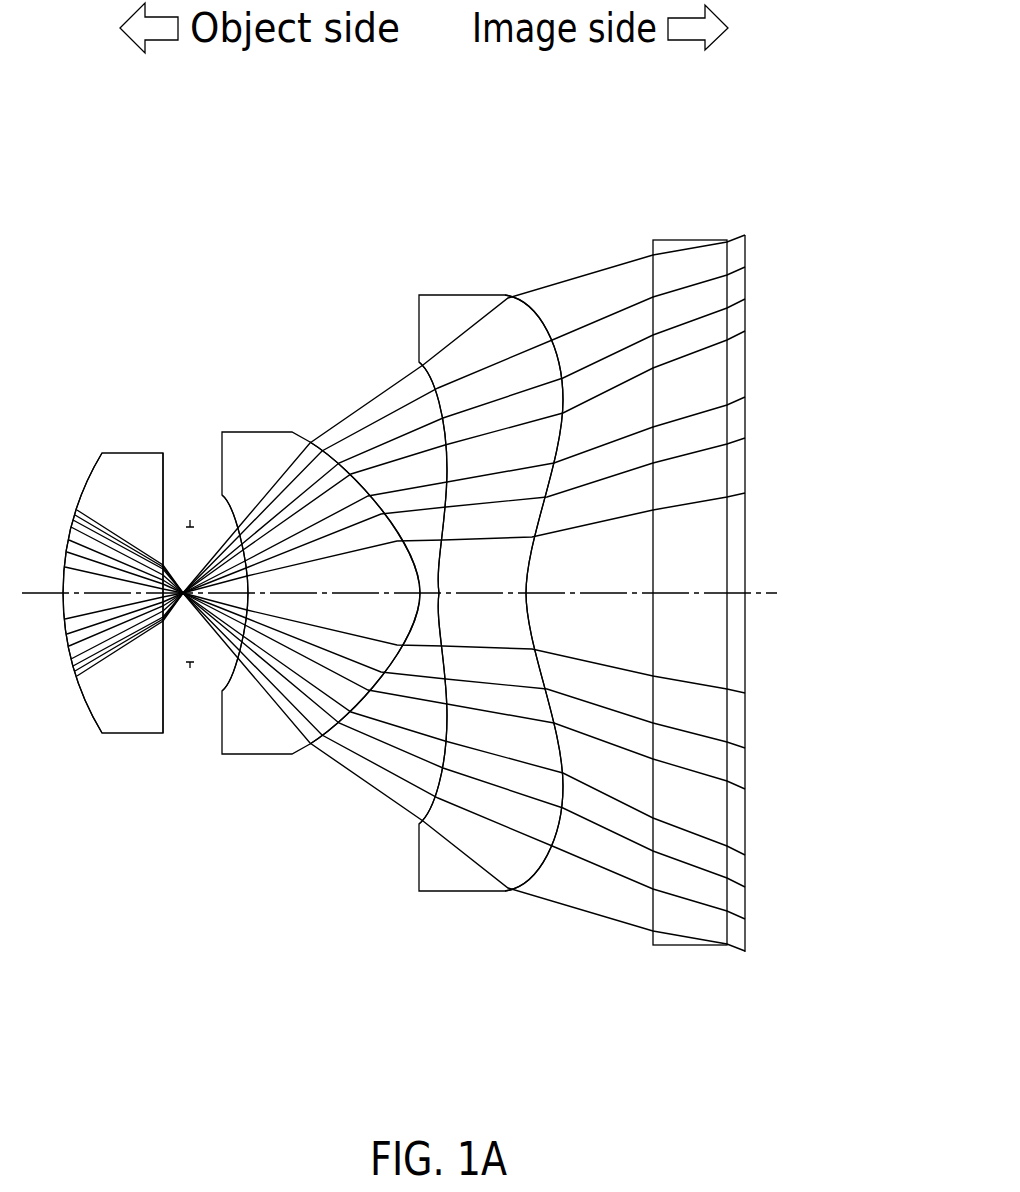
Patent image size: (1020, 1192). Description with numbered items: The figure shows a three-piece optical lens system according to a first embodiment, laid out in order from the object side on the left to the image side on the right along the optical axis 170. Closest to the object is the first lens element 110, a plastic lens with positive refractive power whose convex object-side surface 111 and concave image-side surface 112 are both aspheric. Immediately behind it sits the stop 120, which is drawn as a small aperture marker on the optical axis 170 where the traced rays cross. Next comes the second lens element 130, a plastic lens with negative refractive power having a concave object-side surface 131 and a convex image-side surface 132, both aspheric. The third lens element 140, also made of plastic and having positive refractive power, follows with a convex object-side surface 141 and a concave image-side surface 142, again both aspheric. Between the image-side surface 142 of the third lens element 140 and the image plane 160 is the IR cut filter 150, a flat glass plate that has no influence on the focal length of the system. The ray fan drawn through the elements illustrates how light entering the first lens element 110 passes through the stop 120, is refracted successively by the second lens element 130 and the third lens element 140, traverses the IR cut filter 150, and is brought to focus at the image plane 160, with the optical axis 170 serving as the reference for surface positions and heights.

The first lens element 110 is at (112, 436).
The object-side surface of the first lens element 111 is at (85, 701).
The image-side surface of the first lens element 112 is at (163, 713).
The stop 120 is at (190, 502).
The second lens element 130 is at (237, 416).
The object-side surface of the second lens element 131 is at (222, 680).
The image-side surface of the second lens element 132 is at (364, 697).
The third lens element 140 is at (441, 279).
The object-side surface of the third lens element 141 is at (445, 726).
The image-side surface of the third lens element 142 is at (529, 618).
The IR cut filter 150 is at (664, 224).
The image plane 160 is at (740, 245).
The optical axis 170 is at (768, 592).